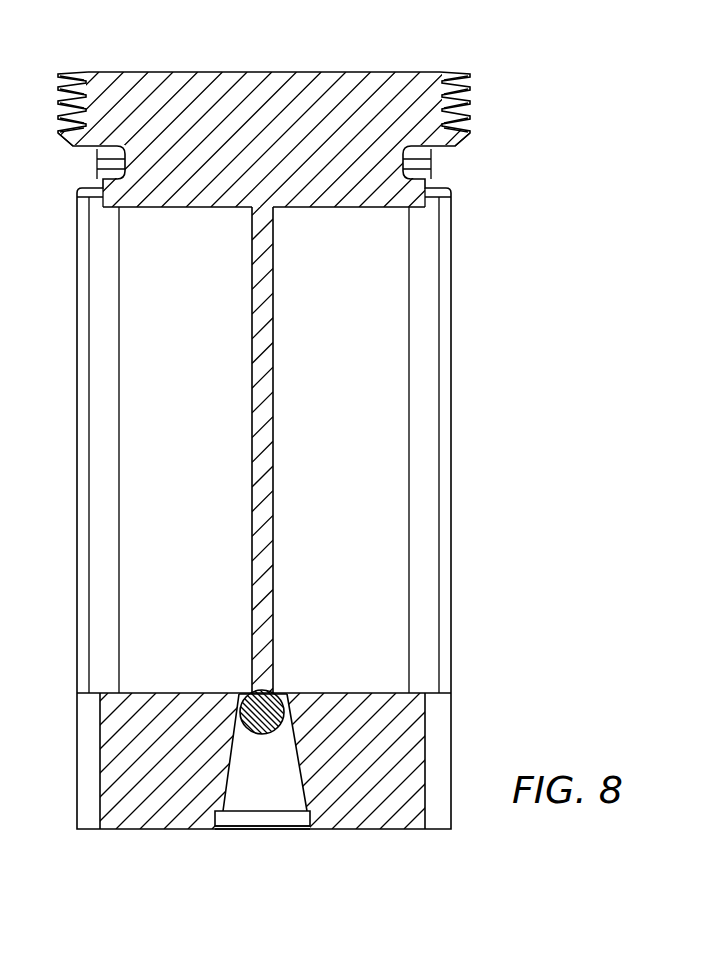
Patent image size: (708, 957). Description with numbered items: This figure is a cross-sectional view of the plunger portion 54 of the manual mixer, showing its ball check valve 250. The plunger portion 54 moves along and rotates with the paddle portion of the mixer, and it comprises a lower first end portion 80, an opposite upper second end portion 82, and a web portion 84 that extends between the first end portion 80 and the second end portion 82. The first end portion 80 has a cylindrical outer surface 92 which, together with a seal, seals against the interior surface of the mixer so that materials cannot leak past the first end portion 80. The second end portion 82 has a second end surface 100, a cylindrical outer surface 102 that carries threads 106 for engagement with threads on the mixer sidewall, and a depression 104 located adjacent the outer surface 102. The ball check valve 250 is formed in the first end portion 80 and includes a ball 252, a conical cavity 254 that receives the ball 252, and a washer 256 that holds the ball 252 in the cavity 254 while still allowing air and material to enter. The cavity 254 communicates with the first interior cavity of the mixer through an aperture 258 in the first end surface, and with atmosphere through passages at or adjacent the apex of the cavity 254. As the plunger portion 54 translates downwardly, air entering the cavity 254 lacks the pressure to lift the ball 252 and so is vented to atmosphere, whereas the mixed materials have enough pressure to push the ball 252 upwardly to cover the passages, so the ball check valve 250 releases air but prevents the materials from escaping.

The second end surface 100 is at (337, 70).
The second end portion 82 is at (413, 100).
The threads 106 is at (458, 125).
The outer surface 102 is at (458, 145).
The depression 104 is at (420, 170).
The web portion 84 is at (407, 448).
The plunger portion 54 is at (451, 525).
The first end portion 80 is at (407, 720).
The outer surface 92 is at (450, 735).
The ball check valve 250 is at (290, 761).
The ball 252 is at (260, 732).
The cavity 254 is at (224, 782).
The washer 256 is at (258, 819).
The aperture 258 is at (217, 831).